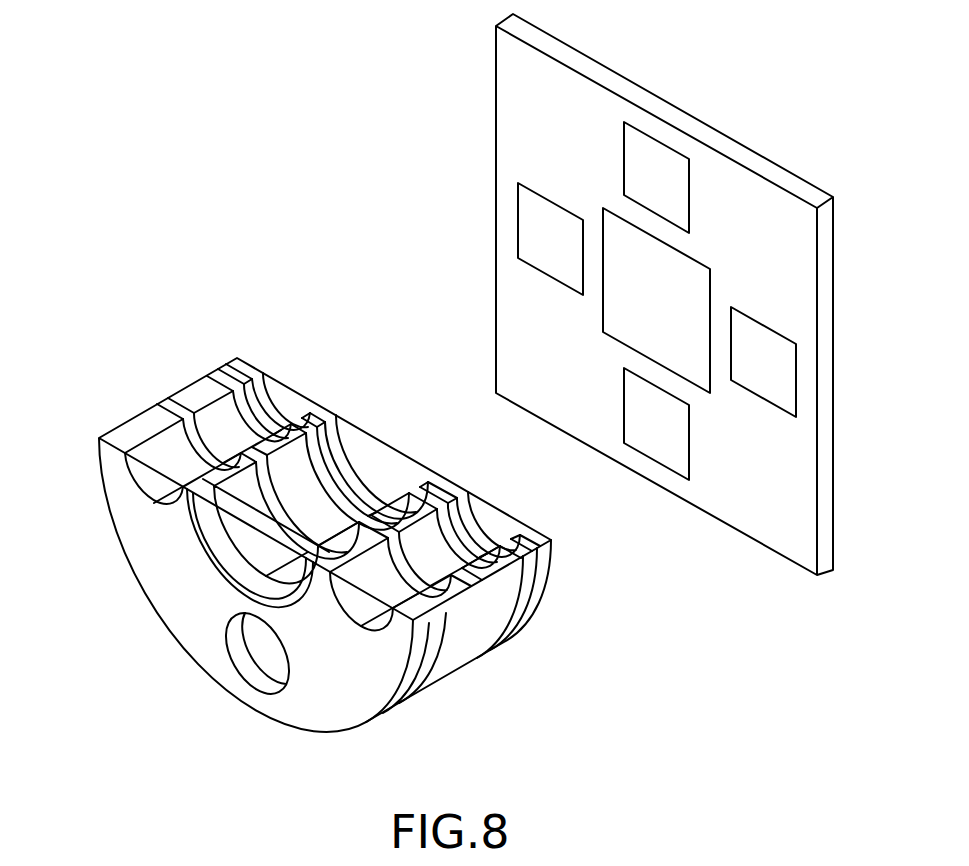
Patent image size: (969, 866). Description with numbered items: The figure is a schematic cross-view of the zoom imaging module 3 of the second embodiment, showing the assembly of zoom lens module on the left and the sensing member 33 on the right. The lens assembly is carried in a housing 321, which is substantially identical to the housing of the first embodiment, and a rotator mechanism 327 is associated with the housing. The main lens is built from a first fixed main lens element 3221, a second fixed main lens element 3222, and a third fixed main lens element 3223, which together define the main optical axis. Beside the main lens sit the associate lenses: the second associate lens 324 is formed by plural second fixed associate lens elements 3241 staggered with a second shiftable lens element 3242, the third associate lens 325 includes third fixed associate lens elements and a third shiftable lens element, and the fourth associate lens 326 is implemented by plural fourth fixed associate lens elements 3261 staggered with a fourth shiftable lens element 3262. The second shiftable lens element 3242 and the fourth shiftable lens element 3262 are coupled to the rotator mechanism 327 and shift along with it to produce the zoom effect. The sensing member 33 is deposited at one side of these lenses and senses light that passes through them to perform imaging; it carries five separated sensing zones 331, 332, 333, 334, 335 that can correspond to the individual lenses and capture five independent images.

The zoom imaging module 3 is at (207, 320).
The housing 321 is at (405, 703).
The rotator mechanism 327 is at (462, 650).
The second associate lens 324 is at (151, 481).
The second fixed associate lens elements 3241 is at (170, 448).
The second shiftable lens element 3242 is at (223, 422).
The first fixed main lens element 3221 is at (263, 505).
The second fixed main lens element 3222 is at (358, 497).
The third fixed main lens element 3223 is at (363, 442).
The fourth associate lens 326 is at (366, 603).
The fourth fixed associate lens elements 3261 is at (427, 537).
The fourth shiftable lens element 3262 is at (510, 527).
The third associate lens 325 is at (253, 656).
The sensing member 33 is at (768, 170).
The sensing zone 331 is at (680, 275).
The sensing zone 332 is at (637, 176).
The sensing zone 333 is at (530, 237).
The sensing zone 334 is at (637, 422).
The sensing zone 335 is at (767, 385).